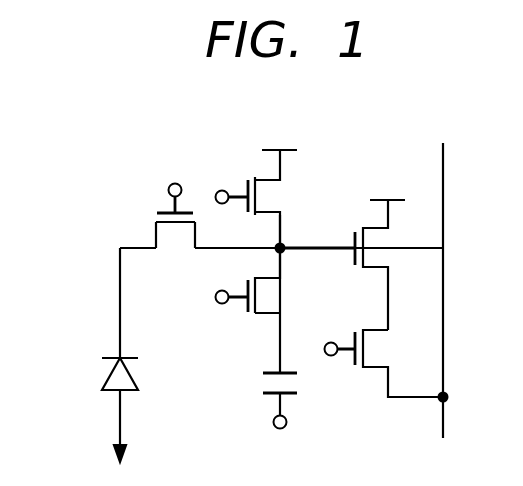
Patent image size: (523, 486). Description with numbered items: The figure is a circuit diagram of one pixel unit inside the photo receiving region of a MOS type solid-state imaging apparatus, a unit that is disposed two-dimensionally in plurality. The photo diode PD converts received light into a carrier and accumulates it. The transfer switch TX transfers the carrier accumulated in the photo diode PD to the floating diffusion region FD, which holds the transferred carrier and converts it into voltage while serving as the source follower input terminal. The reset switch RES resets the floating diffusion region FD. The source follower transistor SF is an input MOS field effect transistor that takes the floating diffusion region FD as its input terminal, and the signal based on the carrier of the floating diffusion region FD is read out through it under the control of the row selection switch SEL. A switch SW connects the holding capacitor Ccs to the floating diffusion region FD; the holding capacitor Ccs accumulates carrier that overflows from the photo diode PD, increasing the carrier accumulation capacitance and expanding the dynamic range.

The reset switch RES is at (252, 176).
The transfer switch TX is at (156, 232).
The floating diffusion region FD is at (286, 245).
The photo diode PD is at (110, 374).
The switch SW is at (259, 316).
The holding capacitor Ccs is at (272, 399).
The source follower transistor SF is at (370, 248).
The row selection switch SEL is at (370, 349).